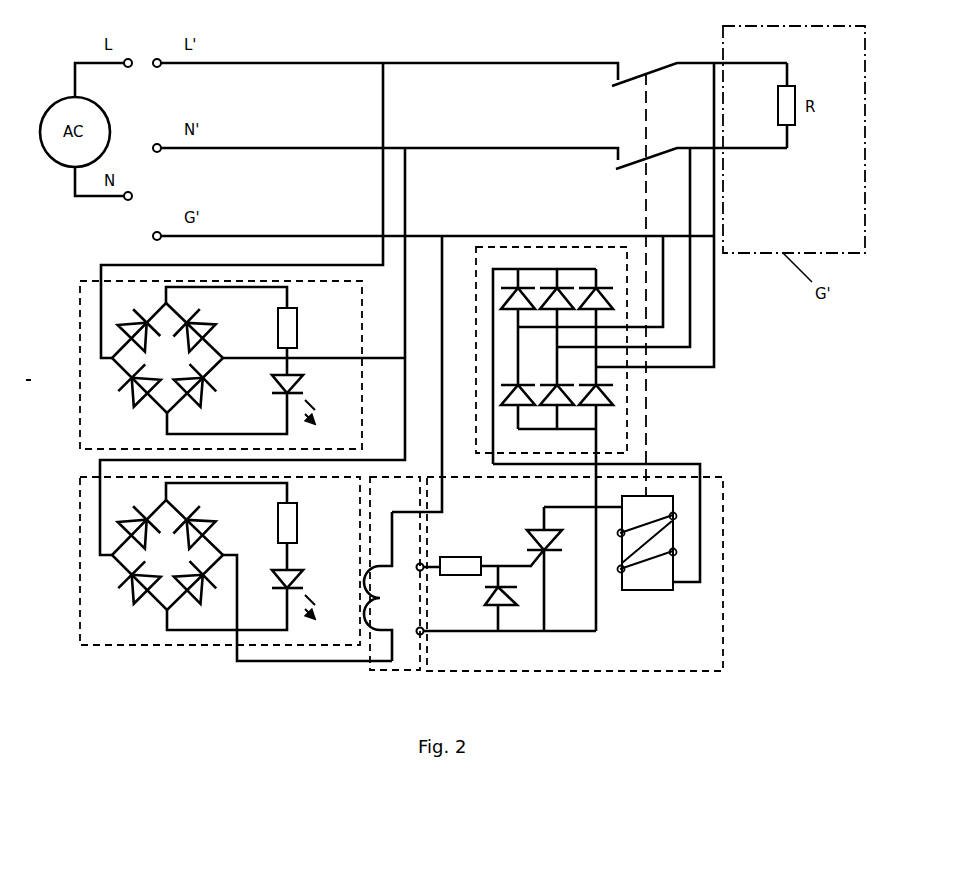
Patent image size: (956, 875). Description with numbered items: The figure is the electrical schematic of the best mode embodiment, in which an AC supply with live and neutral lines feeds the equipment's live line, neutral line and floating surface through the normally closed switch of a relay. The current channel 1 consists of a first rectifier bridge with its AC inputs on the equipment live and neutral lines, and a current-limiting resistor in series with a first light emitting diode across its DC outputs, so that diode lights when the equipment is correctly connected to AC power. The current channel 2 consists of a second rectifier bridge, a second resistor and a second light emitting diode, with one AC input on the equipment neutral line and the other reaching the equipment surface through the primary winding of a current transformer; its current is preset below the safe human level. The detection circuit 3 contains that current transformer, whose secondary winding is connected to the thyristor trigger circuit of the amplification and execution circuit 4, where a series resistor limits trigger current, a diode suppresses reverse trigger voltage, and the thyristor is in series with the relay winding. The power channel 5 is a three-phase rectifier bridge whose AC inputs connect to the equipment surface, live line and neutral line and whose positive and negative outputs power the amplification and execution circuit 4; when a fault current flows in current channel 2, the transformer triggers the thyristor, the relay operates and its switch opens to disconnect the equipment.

The current channel 1 is at (96, 402).
The current channel 2 is at (95, 615).
The detection circuit 3 is at (397, 660).
The amplification and execution circuit 4 is at (715, 622).
The power channel 5 is at (484, 433).